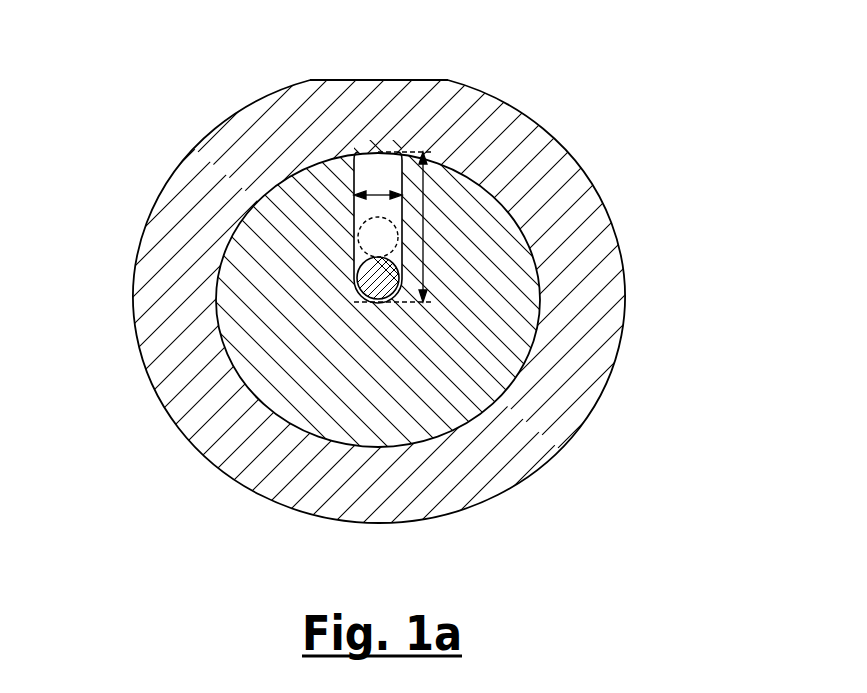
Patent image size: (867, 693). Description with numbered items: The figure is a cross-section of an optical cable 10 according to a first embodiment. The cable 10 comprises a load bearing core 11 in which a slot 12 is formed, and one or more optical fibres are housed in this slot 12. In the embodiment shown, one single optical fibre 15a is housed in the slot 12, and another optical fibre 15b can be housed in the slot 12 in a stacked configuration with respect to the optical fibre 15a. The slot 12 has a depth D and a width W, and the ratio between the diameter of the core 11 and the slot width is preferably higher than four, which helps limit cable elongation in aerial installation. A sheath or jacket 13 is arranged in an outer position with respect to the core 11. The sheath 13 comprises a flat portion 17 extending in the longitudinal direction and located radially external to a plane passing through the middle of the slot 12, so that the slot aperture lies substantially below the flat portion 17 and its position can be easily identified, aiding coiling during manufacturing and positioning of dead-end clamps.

The optical cable 10 is at (612, 169).
The load bearing core 11 is at (503, 312).
The slot 12 is at (365, 202).
The sheath or jacket 13 is at (578, 220).
The optical fibre 15a is at (368, 281).
The optical fibre 15b is at (367, 238).
The flat portion 17 is at (376, 73).